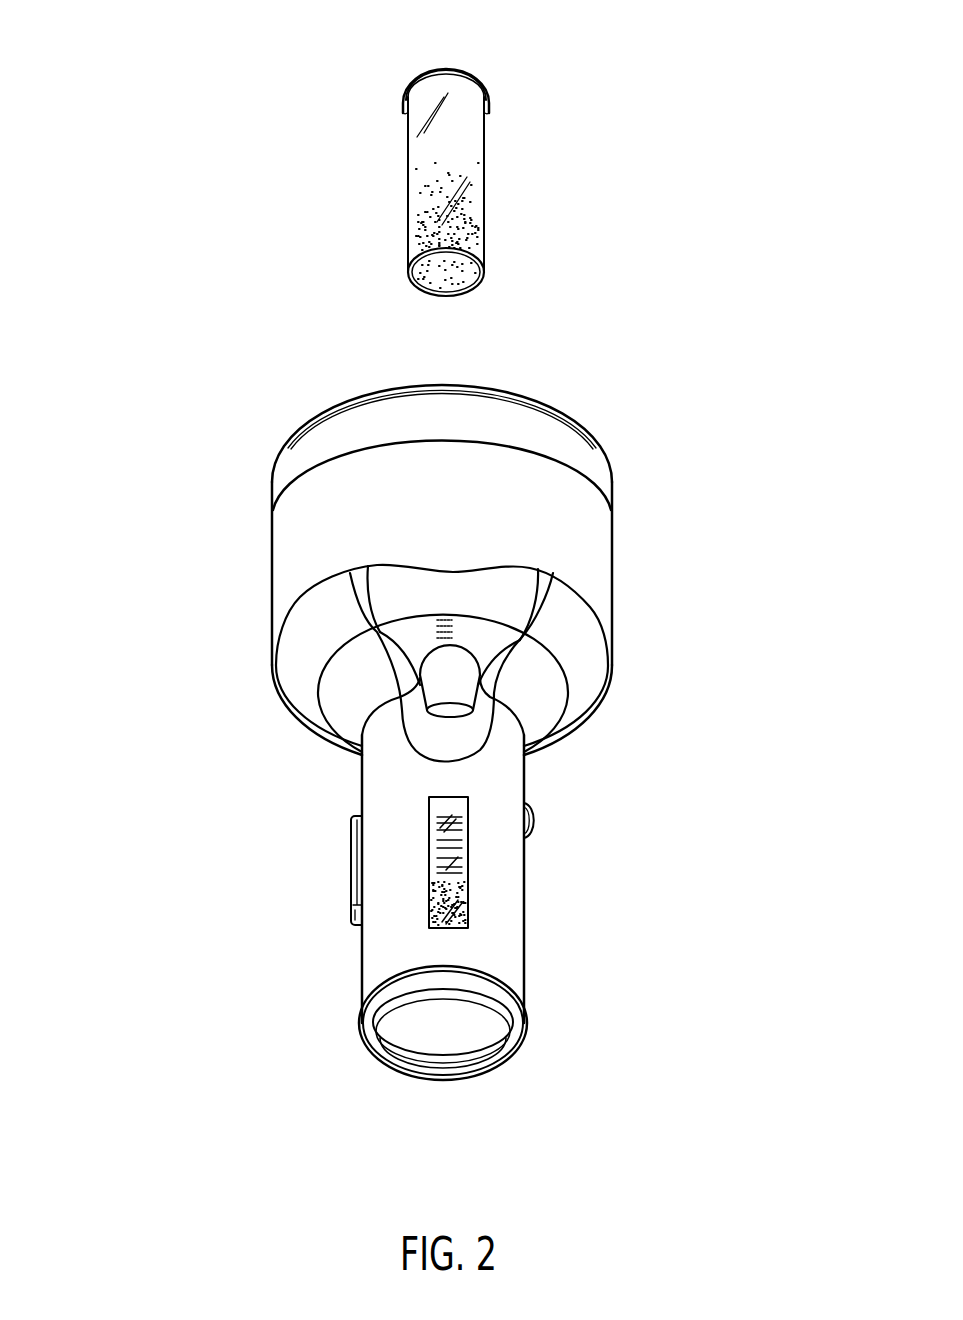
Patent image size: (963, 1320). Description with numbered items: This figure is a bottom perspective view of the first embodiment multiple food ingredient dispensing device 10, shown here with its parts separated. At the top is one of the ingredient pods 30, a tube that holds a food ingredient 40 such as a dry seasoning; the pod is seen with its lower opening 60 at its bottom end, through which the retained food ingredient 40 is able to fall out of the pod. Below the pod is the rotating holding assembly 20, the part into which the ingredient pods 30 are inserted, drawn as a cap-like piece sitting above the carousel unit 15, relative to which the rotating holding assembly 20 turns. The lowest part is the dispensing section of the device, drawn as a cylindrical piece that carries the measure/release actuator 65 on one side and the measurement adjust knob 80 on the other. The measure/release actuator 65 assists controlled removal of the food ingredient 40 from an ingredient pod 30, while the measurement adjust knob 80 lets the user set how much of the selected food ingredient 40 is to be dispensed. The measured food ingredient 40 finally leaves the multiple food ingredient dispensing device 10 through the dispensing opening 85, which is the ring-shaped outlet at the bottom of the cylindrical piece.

The multiple food ingredient dispensing device 10 is at (114, 171).
The carousel unit 15 is at (560, 540).
The rotating holding assembly 20 is at (552, 447).
The ingredient pod 30 is at (453, 128).
The food ingredient 40 is at (412, 204).
The lower opening 60 is at (458, 298).
The measure/release actuator 65 is at (350, 858).
The measurement adjust knob 80 is at (537, 825).
The dispensing opening 85 is at (357, 1027).